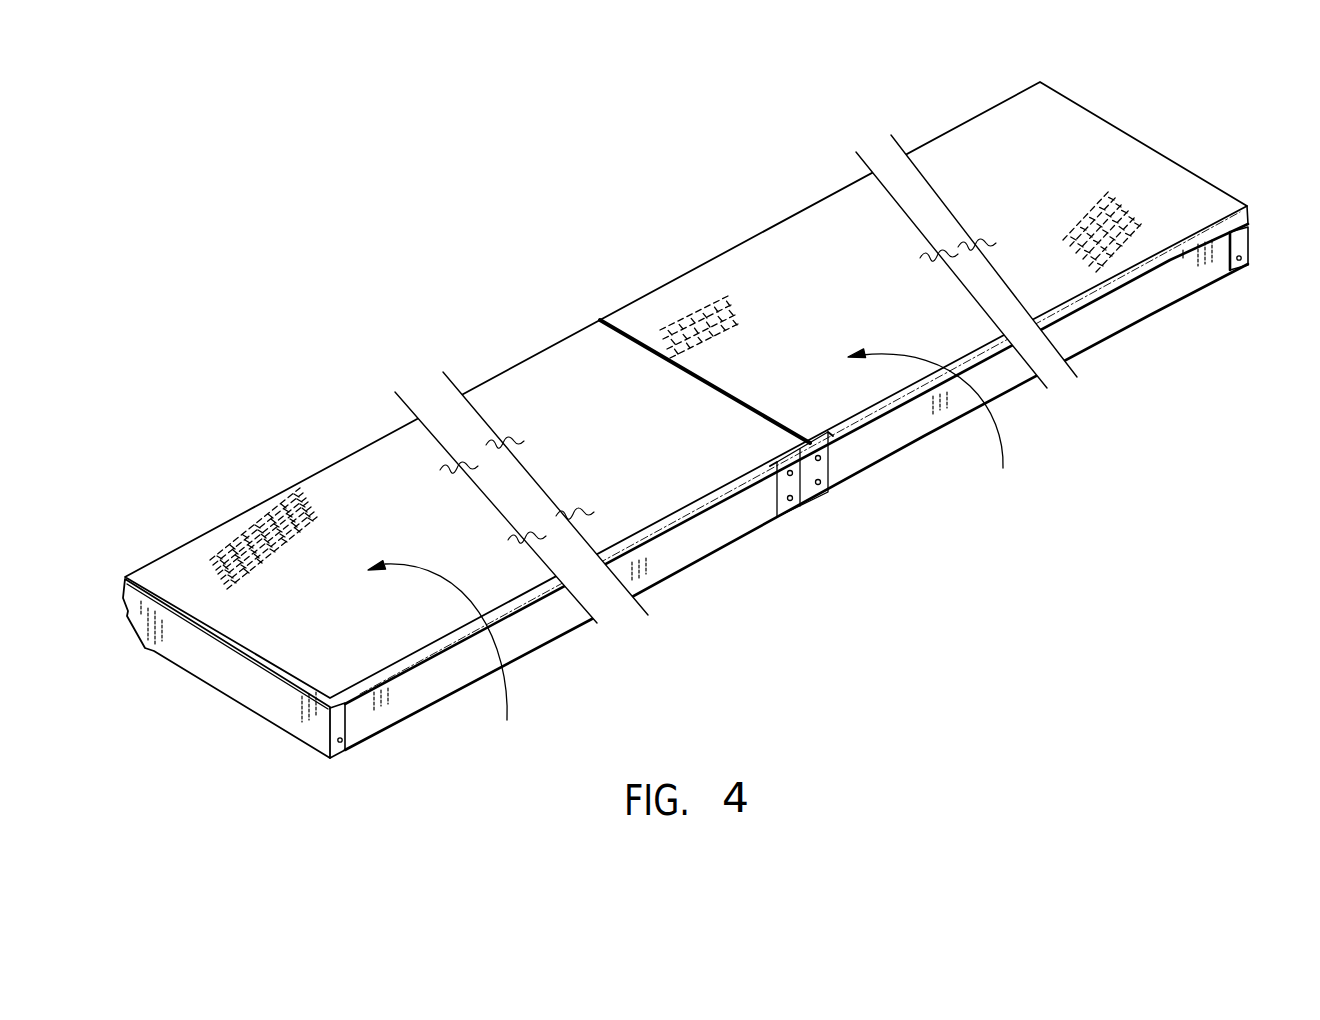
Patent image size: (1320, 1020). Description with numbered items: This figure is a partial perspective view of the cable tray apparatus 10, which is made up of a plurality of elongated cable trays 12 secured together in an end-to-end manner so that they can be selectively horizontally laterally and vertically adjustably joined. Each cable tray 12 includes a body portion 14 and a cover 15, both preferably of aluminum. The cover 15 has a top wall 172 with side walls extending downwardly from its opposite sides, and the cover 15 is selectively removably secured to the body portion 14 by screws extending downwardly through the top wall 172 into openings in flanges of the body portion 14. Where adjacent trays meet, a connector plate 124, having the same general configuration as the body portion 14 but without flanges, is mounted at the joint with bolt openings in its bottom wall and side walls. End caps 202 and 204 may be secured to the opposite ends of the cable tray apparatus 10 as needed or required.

The cable tray apparatus 10 is at (706, 429).
The cable tray 12 is at (686, 401).
The body portion 14 is at (708, 548).
The cover 15 is at (699, 553).
The connector plate 124 is at (801, 498).
The top wall 172 is at (840, 316).
The end cap 202 is at (261, 754).
The end cap 204 is at (1257, 251).